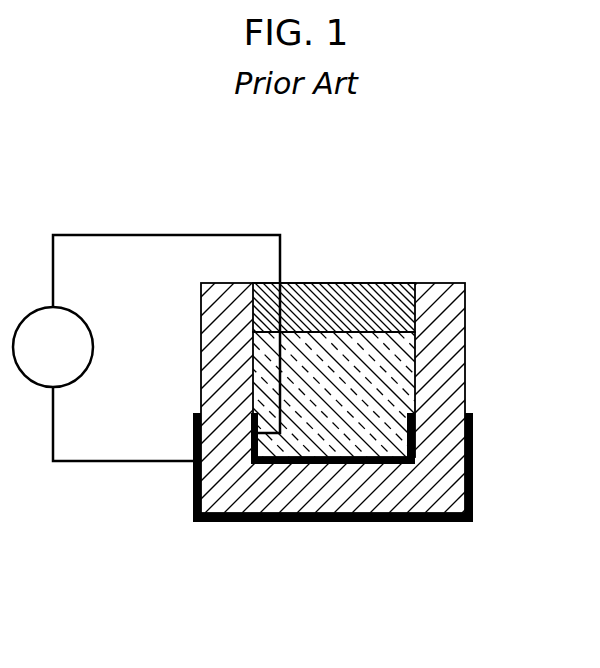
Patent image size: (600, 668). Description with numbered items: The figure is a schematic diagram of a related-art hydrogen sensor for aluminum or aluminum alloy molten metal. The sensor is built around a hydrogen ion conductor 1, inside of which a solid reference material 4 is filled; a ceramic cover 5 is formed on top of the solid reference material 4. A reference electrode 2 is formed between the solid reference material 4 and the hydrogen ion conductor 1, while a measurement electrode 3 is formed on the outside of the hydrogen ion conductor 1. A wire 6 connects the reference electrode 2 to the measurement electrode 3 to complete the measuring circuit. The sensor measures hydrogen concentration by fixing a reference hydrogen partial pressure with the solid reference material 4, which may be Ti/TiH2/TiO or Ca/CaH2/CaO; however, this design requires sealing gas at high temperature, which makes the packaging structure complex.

The hydrogen ion conductor 1 is at (448, 382).
The reference electrode 2 is at (266, 464).
The measurement electrode 3 is at (473, 447).
The solid reference material 4 is at (395, 360).
The ceramic cover 5 is at (347, 297).
The wire 6 is at (222, 234).